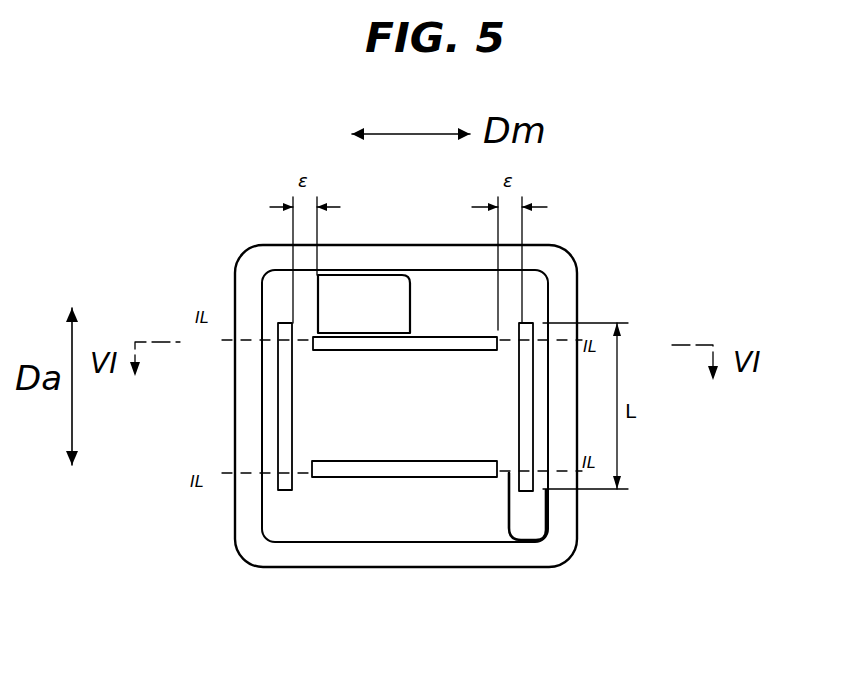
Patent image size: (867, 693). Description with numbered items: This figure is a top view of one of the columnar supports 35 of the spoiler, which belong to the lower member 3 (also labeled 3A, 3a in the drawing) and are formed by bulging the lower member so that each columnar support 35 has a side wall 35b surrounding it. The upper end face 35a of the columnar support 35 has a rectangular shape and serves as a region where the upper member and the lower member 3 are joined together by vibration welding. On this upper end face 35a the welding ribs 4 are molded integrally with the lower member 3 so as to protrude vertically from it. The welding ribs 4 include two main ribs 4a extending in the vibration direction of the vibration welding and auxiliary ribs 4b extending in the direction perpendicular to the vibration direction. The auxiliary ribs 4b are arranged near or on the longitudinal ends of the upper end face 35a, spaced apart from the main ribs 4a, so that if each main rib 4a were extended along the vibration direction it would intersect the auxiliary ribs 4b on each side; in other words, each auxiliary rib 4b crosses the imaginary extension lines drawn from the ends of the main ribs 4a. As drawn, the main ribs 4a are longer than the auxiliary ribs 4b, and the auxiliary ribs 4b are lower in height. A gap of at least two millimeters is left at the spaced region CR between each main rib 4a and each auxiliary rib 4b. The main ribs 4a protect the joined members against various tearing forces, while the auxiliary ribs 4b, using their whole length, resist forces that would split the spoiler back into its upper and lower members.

The lower member 3 is at (441, 410).
The connector terminal 3A is at (441, 410).
The terminal portion 3a is at (740, 562).
The welding ribs 4 is at (338, 410).
The main ribs 4a is at (402, 274).
The auxiliary ribs 4b is at (276, 421).
The columnar supports 35 is at (406, 449).
The upper end face 35a is at (407, 508).
The side wall 35b is at (368, 555).
The spaced region CR is at (300, 348).